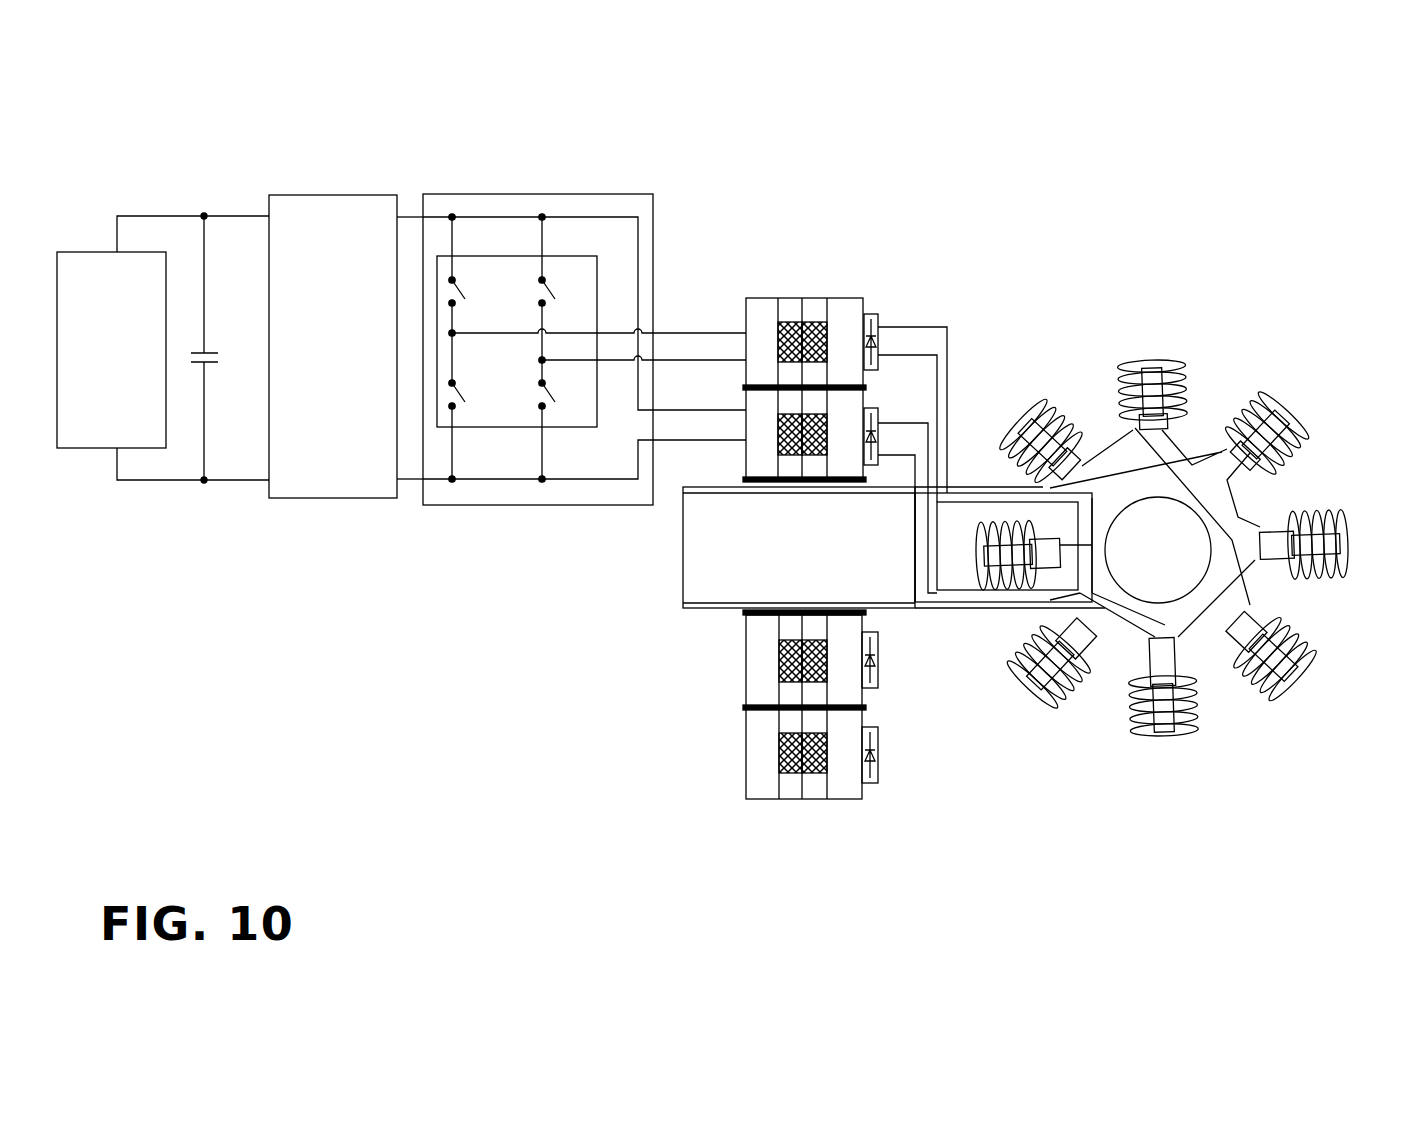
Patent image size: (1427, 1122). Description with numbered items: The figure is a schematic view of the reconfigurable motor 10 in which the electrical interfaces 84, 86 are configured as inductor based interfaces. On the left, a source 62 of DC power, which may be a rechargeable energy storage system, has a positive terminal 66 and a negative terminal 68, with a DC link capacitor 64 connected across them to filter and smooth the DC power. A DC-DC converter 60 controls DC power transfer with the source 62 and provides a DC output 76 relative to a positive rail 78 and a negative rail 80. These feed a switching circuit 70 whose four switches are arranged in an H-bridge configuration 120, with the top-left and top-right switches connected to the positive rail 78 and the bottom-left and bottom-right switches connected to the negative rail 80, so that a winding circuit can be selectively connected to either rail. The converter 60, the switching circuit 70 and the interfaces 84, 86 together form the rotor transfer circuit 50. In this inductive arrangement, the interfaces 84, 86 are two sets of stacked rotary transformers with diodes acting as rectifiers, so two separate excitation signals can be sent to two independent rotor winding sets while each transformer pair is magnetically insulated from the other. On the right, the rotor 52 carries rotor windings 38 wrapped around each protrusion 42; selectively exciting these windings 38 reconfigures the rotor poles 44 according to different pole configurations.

The reconfigurable motor 10 is at (982, 106).
The rotor windings 38 is at (1195, 715).
The protrusion 42 is at (1088, 702).
The rotor poles 44 is at (985, 612).
The rotor transfer circuit 50 is at (690, 170).
The stator 52 is at (1350, 593).
The DC-DC converter 60 is at (343, 361).
The source 62 is at (120, 361).
The DC link capacitor 64 is at (207, 363).
The positive terminal 66 is at (117, 252).
The negative terminal 68 is at (117, 448).
The switching circuit 70 is at (533, 194).
The DC output 76 is at (419, 184).
The positive rail 78 is at (406, 215).
The negative rail 80 is at (406, 482).
The electrical interface 84 is at (716, 460).
The electrical interface 86 is at (890, 298).
The H-bridge configuration 120 is at (551, 256).